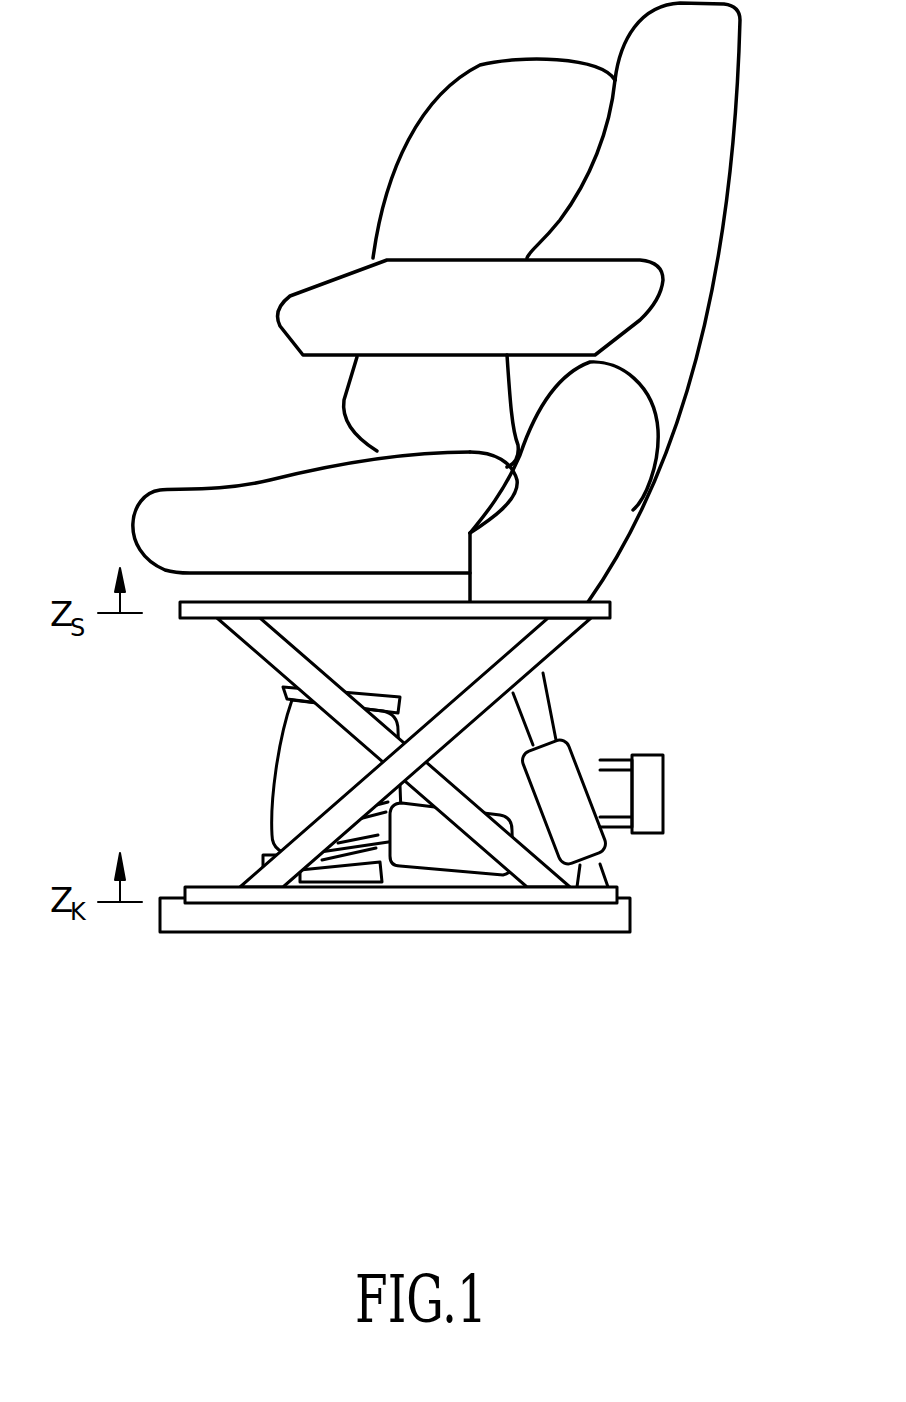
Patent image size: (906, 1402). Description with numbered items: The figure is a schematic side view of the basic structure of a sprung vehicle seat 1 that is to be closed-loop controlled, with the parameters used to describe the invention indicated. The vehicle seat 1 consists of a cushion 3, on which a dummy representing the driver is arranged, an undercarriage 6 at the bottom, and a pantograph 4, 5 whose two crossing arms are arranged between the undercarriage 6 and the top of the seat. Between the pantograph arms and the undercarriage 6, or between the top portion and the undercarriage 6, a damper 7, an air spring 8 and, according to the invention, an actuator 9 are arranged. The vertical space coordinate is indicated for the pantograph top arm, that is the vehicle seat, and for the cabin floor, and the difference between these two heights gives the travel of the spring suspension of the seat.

The vehicle seat 1 is at (620, 447).
The cushion 3 is at (200, 512).
The pantograph 4 is at (573, 642).
The pantograph 5 is at (280, 652).
The undercarriage 6 is at (520, 893).
The damper 7 is at (433, 857).
The air spring 8 is at (310, 780).
The actuator 9 is at (560, 767).